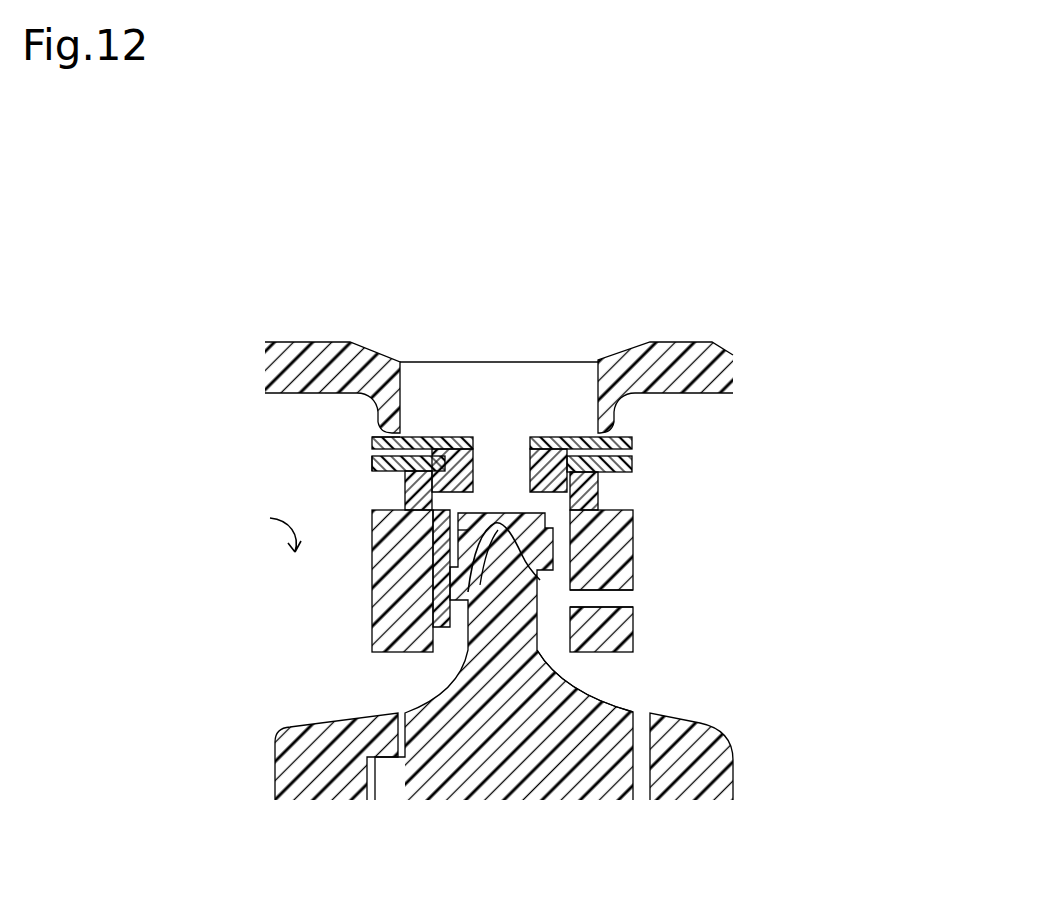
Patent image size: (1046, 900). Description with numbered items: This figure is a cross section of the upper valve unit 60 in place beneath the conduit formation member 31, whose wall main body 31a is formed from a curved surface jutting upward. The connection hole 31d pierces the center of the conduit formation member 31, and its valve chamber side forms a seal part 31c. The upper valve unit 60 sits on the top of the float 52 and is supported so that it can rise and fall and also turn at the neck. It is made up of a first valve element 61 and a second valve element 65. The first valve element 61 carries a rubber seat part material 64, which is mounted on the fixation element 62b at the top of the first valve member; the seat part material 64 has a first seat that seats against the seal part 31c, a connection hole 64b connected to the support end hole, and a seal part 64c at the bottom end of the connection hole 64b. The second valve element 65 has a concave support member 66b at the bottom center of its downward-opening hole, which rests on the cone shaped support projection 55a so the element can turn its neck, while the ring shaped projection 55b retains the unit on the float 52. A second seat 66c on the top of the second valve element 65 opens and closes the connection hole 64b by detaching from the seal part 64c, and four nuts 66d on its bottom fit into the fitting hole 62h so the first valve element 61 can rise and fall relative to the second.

The conduit formation member 31 is at (316, 370).
The wall main body 31a is at (668, 345).
The seal part 31c is at (370, 437).
The connection hole 31d is at (402, 398).
The float 52 is at (745, 766).
The support projection 55a is at (580, 614).
The ring shaped projection 55b is at (453, 595).
The upper valve unit 60 is at (760, 497).
The first valve element 61 is at (633, 466).
The fixation element 62b is at (372, 463).
The fitting hole 62h is at (612, 617).
The seat part material 64 is at (620, 438).
The connection hole 64b is at (540, 487).
The seal part 64c is at (463, 462).
The second valve element 65 is at (545, 555).
The support member 66b is at (545, 553).
The second seat 66c is at (500, 524).
The nuts 66d is at (600, 652).